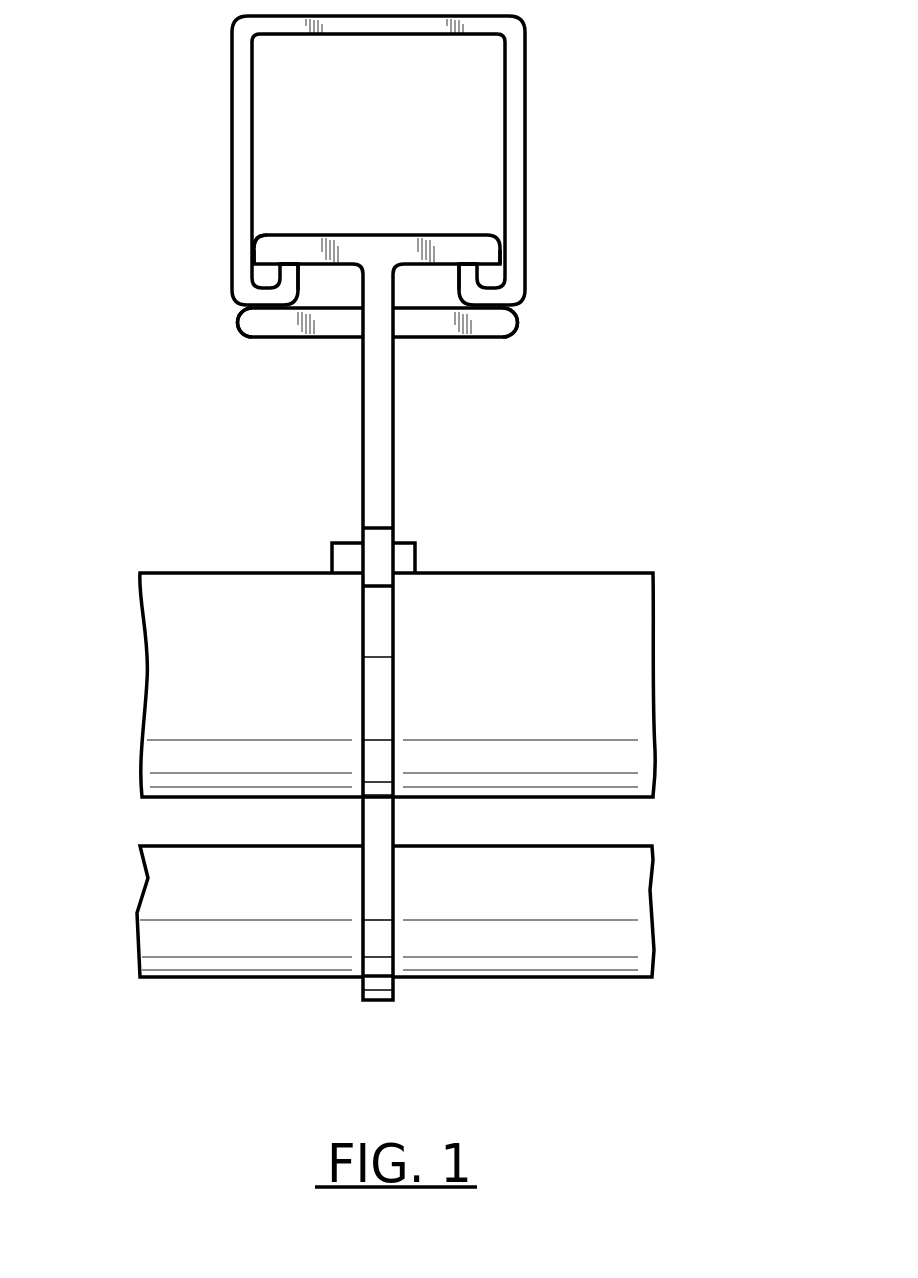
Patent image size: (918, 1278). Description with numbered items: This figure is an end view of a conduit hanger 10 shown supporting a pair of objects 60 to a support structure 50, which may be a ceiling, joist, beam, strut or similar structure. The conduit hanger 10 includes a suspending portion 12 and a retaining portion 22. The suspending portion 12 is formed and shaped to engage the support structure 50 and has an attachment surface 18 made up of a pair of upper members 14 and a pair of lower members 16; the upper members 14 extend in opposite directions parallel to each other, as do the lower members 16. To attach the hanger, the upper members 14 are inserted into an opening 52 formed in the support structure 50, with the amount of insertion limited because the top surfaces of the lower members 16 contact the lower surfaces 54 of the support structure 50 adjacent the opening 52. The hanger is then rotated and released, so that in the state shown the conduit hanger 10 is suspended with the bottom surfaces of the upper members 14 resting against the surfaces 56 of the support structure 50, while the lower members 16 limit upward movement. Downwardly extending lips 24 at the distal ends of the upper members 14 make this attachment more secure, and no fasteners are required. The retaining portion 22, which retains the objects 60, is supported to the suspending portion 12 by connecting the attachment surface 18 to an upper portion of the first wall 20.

The conduit hanger 10 is at (663, 140).
The suspending portion 12 is at (230, 344).
The upper member 14 is at (433, 234).
The lower member 16 is at (267, 340).
The attachment surface 18 is at (283, 235).
The first wall 20 is at (385, 457).
The retaining portion 22 is at (570, 822).
The downwardly extending lip 24 is at (262, 243).
The support structure 50 is at (523, 120).
The opening 52 is at (468, 234).
The lower surface 54 is at (240, 317).
The surface 56 is at (292, 248).
The object 60 is at (188, 585).